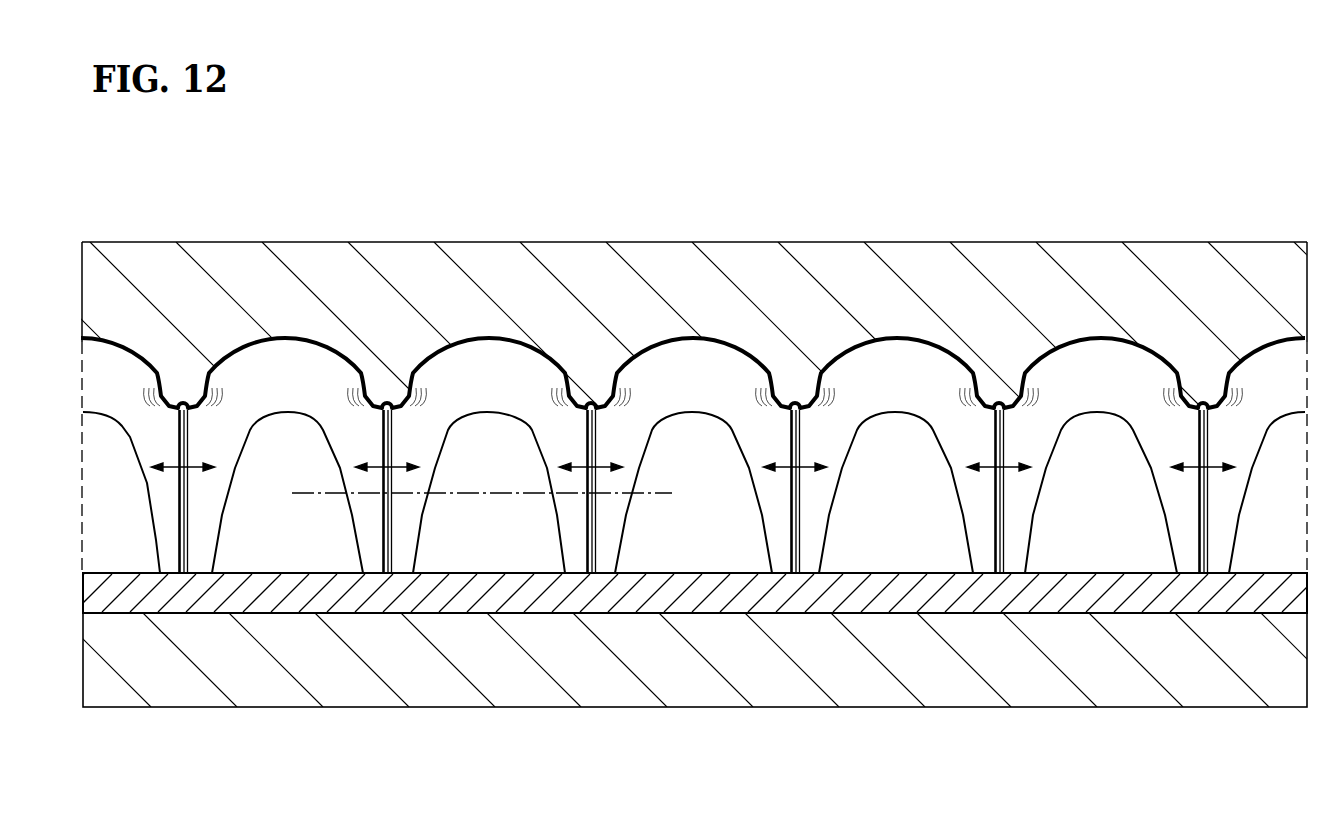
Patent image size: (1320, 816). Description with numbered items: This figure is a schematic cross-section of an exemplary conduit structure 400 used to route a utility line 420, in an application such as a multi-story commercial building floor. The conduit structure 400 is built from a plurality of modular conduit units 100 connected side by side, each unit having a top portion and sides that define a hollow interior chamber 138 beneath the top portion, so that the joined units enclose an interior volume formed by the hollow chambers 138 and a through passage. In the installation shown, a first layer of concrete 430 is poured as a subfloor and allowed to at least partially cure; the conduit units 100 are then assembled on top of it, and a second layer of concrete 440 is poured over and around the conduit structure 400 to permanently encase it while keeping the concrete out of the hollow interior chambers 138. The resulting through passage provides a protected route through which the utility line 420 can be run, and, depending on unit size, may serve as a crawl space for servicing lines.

The conduit unit 100 is at (860, 352).
The hollow interior chamber 138 is at (299, 381).
The conduit structure 400 is at (1262, 345).
The utility line 420 is at (862, 574).
The first layer of concrete 430 is at (1155, 702).
The second layer of concrete 440 is at (897, 250).